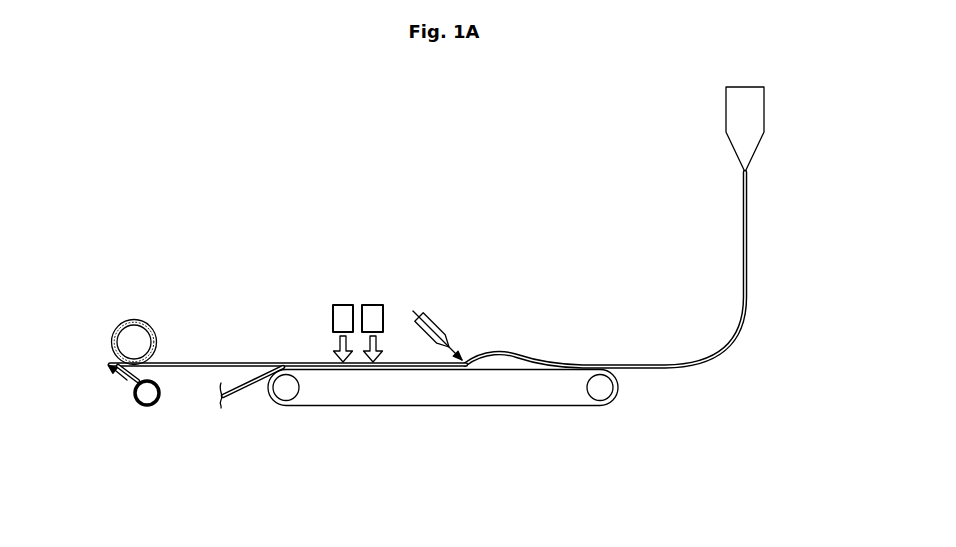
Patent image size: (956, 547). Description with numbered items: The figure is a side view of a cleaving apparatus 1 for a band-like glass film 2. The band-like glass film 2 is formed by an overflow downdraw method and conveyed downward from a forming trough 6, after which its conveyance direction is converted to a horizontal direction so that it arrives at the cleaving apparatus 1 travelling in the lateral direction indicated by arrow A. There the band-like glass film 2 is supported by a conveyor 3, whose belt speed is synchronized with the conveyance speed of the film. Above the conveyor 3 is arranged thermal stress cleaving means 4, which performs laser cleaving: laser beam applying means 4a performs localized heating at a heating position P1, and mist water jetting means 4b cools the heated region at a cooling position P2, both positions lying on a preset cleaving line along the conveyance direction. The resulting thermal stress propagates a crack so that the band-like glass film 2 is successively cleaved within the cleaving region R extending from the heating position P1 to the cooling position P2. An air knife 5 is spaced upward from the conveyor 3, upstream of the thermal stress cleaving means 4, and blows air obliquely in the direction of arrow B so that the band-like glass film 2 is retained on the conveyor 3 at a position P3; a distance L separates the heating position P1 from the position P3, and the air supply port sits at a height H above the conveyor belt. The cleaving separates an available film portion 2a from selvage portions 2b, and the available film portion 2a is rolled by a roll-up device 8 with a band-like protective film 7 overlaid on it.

The cleaving apparatus 1 is at (485, 235).
The band-like glass film 2 is at (749, 236).
The available film portion 2a is at (205, 362).
The selvage portions 2b is at (247, 389).
The conveyor 3 is at (568, 407).
The thermal stress cleaving means 4 is at (392, 237).
The laser beam applying means 4a is at (373, 304).
The mist water jetting means 4b is at (343, 304).
The air knife 5 is at (429, 316).
The forming trough 6 is at (766, 111).
The band-like protective film 7 is at (132, 378).
The roll-up device 8 is at (136, 316).
The heating position P1 is at (374, 362).
The cooling position P2 is at (343, 362).
The position P3 is at (468, 360).
The air blow direction B is at (463, 360).
The cleaving region R is at (372, 370).
The distance L is at (463, 370).
The height H is at (483, 345).
The conveyance direction A is at (578, 335).